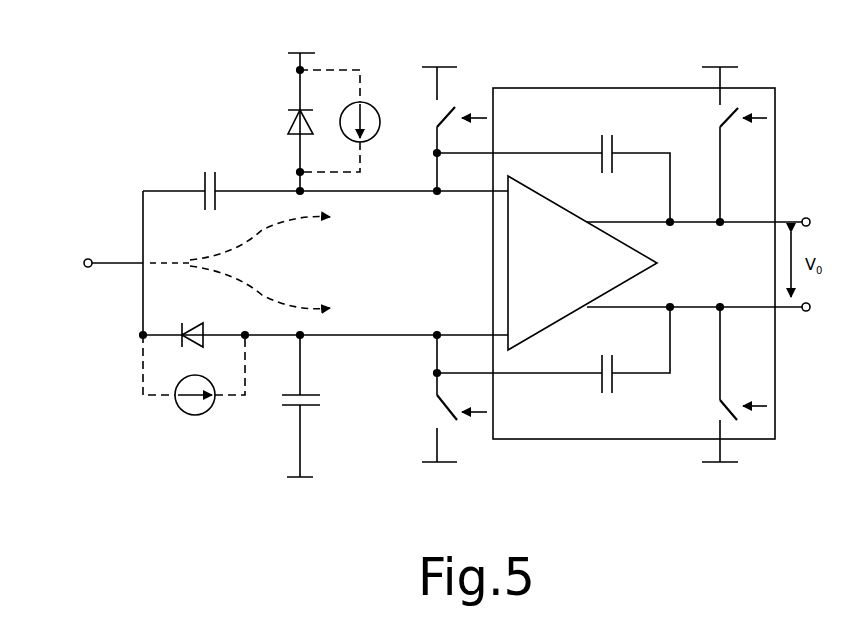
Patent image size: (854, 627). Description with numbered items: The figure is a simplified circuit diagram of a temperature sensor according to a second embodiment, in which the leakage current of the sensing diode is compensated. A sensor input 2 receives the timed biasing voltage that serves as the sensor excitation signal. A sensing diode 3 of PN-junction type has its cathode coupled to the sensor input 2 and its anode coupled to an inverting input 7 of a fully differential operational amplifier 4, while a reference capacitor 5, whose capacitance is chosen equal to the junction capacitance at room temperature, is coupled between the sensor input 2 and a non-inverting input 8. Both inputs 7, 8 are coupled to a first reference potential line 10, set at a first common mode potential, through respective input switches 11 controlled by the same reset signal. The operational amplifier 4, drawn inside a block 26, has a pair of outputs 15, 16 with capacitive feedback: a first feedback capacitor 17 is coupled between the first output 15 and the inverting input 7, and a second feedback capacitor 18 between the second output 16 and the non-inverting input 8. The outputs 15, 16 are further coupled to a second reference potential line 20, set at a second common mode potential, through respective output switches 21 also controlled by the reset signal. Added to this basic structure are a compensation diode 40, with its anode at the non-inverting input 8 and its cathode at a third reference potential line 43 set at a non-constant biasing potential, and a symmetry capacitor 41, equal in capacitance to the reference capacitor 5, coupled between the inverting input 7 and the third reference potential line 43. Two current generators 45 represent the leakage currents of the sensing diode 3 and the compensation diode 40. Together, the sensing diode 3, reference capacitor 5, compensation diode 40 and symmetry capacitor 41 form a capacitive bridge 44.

The sensor input 2 is at (86, 256).
The sensing diode 3 is at (180, 343).
The operational amplifier 4 is at (562, 274).
The reference capacitor 5 is at (205, 168).
The inverting input 7 is at (437, 330).
The non-inverting input 8 is at (437, 200).
The first reference potential line 10 is at (450, 72).
The input switch 11 is at (447, 104).
The first output 15 is at (811, 311).
The second output 16 is at (808, 216).
The first feedback capacitor 17 is at (600, 385).
The second feedback capacitor 18 is at (600, 142).
The second reference potential line 20 is at (700, 68).
The output switch 21 is at (718, 121).
The charge amplifier block 26 is at (593, 442).
The compensation diode 40 is at (288, 128).
The symmetry capacitor 41 is at (312, 408).
The third reference potential line 43 is at (293, 62).
The capacitive bridge 44 is at (140, 168).
The current generator 45 is at (378, 110).